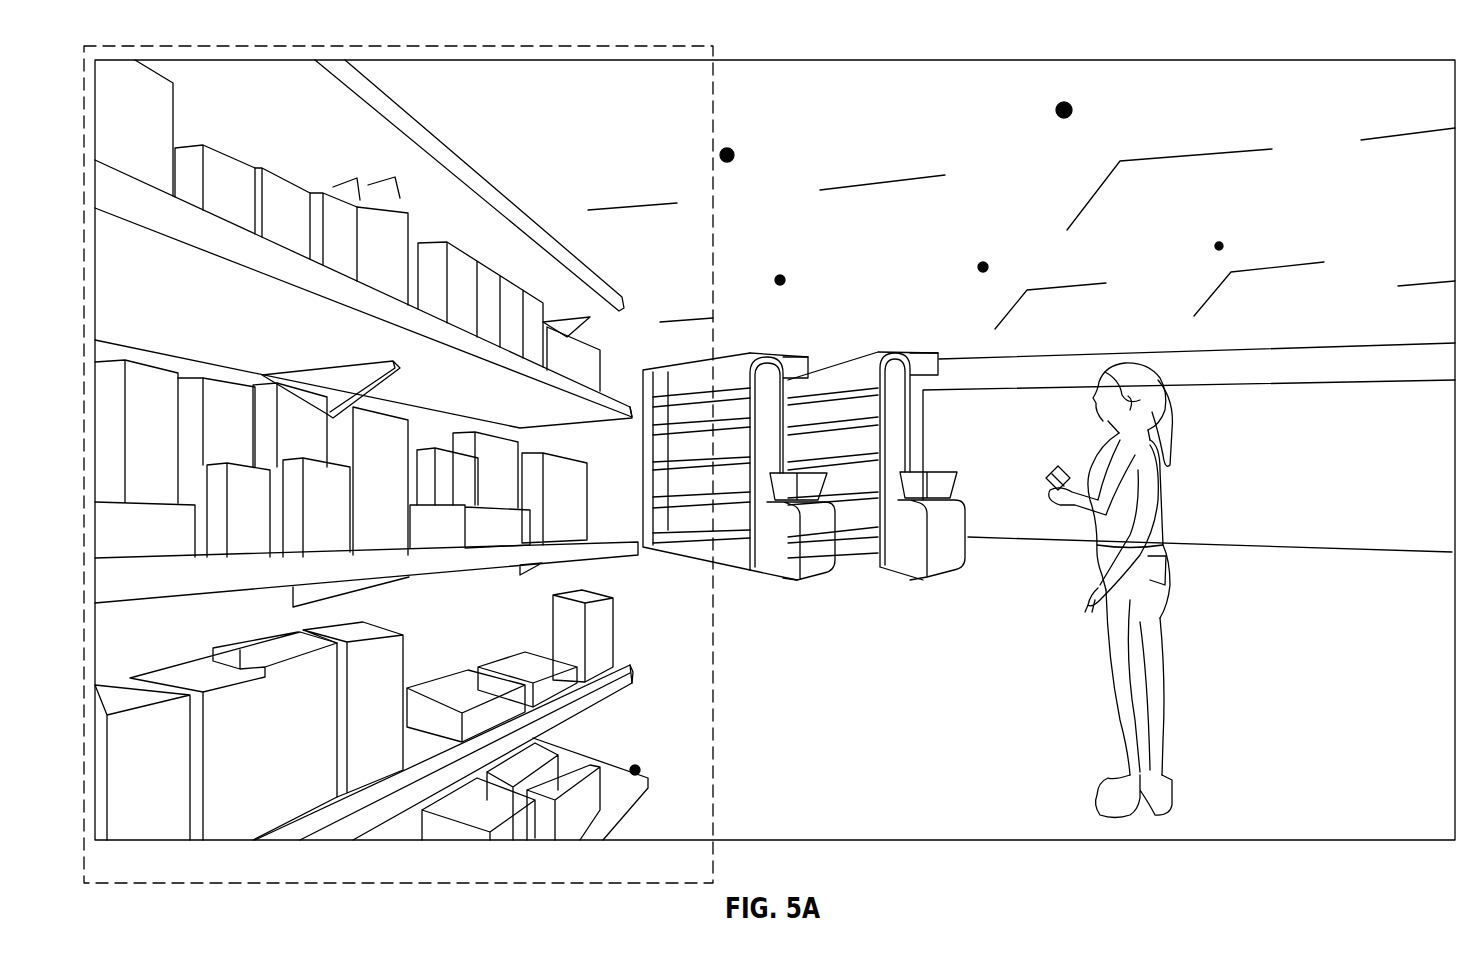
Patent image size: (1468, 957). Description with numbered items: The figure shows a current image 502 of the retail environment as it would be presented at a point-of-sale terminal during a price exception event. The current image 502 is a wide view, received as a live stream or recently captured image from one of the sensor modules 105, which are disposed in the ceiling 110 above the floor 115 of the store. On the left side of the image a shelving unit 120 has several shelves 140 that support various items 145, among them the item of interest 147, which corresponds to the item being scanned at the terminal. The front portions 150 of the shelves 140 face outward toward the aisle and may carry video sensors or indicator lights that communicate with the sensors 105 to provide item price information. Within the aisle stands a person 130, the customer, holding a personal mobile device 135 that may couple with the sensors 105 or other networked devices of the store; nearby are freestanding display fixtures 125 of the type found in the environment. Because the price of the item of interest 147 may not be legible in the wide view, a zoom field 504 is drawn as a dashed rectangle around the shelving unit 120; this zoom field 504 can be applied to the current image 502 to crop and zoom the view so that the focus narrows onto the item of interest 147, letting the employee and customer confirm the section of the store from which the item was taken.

The current image 502 is at (1311, 41).
The zoom field 504 is at (703, 41).
The sensor module 105 is at (728, 150).
The ceiling 110 is at (1351, 103).
The floor 115 is at (1326, 811).
The shelving unit 120 is at (474, 119).
The display stand 125 is at (777, 347).
The person 130 is at (1122, 590).
The personal mobile device 135 is at (1040, 468).
The shelf 140 is at (503, 203).
The item 145 is at (268, 524).
The item of interest 147 is at (403, 455).
The front portion of shelf 150 is at (608, 407).